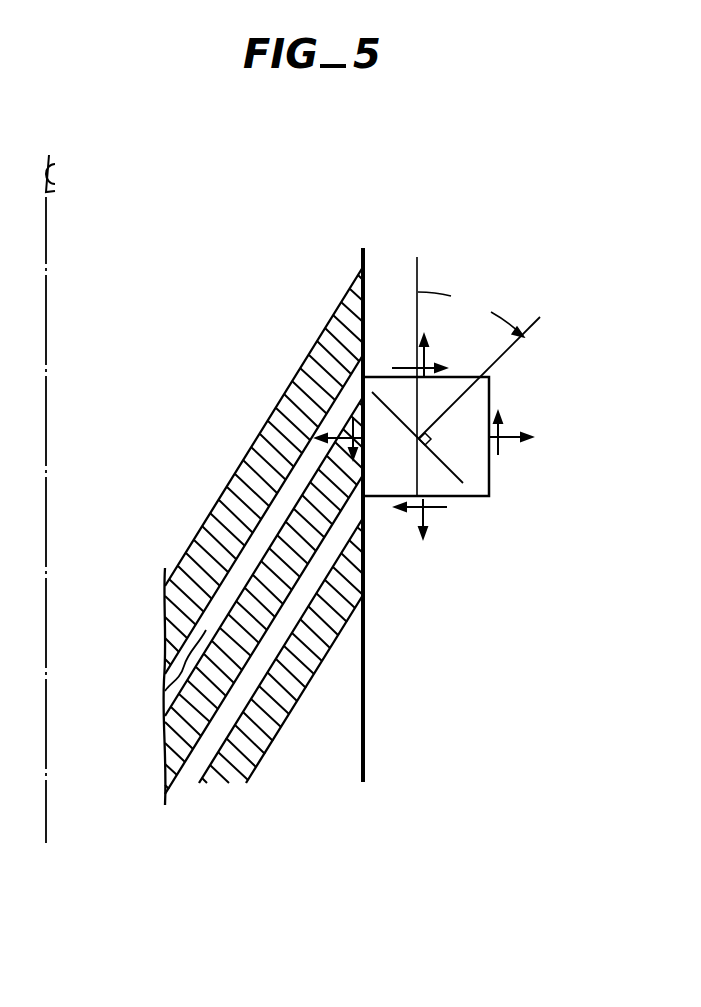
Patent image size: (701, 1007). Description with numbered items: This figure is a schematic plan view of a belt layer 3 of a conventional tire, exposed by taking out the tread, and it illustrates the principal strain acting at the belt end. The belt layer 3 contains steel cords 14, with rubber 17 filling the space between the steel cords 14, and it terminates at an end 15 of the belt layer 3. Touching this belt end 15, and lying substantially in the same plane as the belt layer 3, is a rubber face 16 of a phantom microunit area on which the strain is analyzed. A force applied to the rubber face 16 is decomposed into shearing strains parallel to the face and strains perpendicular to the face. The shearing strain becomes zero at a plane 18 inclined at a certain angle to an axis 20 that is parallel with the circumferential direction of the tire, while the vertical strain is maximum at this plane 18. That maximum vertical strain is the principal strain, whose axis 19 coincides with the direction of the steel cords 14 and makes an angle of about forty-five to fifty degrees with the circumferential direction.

The belt layer 3 is at (222, 253).
The steel cord 14 is at (275, 409).
The end of the belt layer 15 is at (365, 668).
The rubber face 16 is at (490, 379).
The rubber 17 is at (165, 691).
The plane 18 is at (456, 474).
The axis of principal strain 19 is at (540, 317).
The axis 20 is at (418, 271).